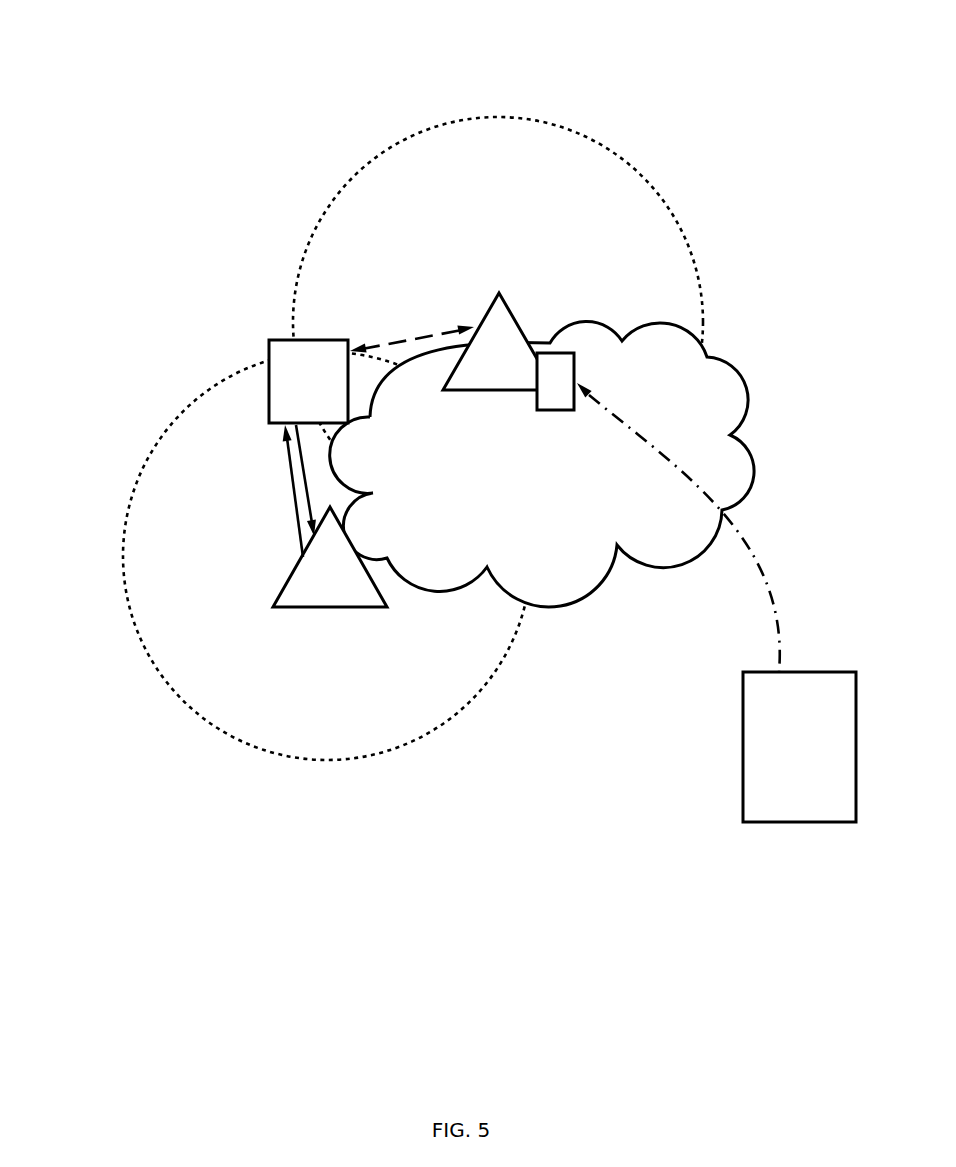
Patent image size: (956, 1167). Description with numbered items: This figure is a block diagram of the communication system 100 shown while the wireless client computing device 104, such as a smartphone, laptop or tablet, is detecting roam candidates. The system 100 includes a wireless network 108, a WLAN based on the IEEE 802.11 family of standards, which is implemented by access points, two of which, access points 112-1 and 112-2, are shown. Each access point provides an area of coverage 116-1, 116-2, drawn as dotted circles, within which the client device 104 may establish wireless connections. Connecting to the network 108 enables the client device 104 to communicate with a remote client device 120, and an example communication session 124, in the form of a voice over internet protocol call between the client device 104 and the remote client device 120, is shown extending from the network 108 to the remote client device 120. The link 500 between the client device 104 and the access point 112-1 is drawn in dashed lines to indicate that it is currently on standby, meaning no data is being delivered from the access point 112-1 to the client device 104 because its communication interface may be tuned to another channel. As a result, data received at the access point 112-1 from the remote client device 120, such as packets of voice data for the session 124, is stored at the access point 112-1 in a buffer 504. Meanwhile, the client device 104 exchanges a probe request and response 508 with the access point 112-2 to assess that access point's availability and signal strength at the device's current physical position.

The communication system 100 is at (122, 92).
The wireless client computing device 104 is at (327, 394).
The wireless network 108 is at (754, 386).
The access point 112-1 is at (530, 371).
The access point 112-2 is at (361, 586).
The area of coverage 116-1 is at (663, 208).
The area of coverage 116-2 is at (363, 760).
The remote client device 120 is at (781, 759).
The communication session 124 is at (770, 595).
The link 500 is at (408, 340).
The buffer 504 is at (571, 372).
The probe request and response 508 is at (283, 491).